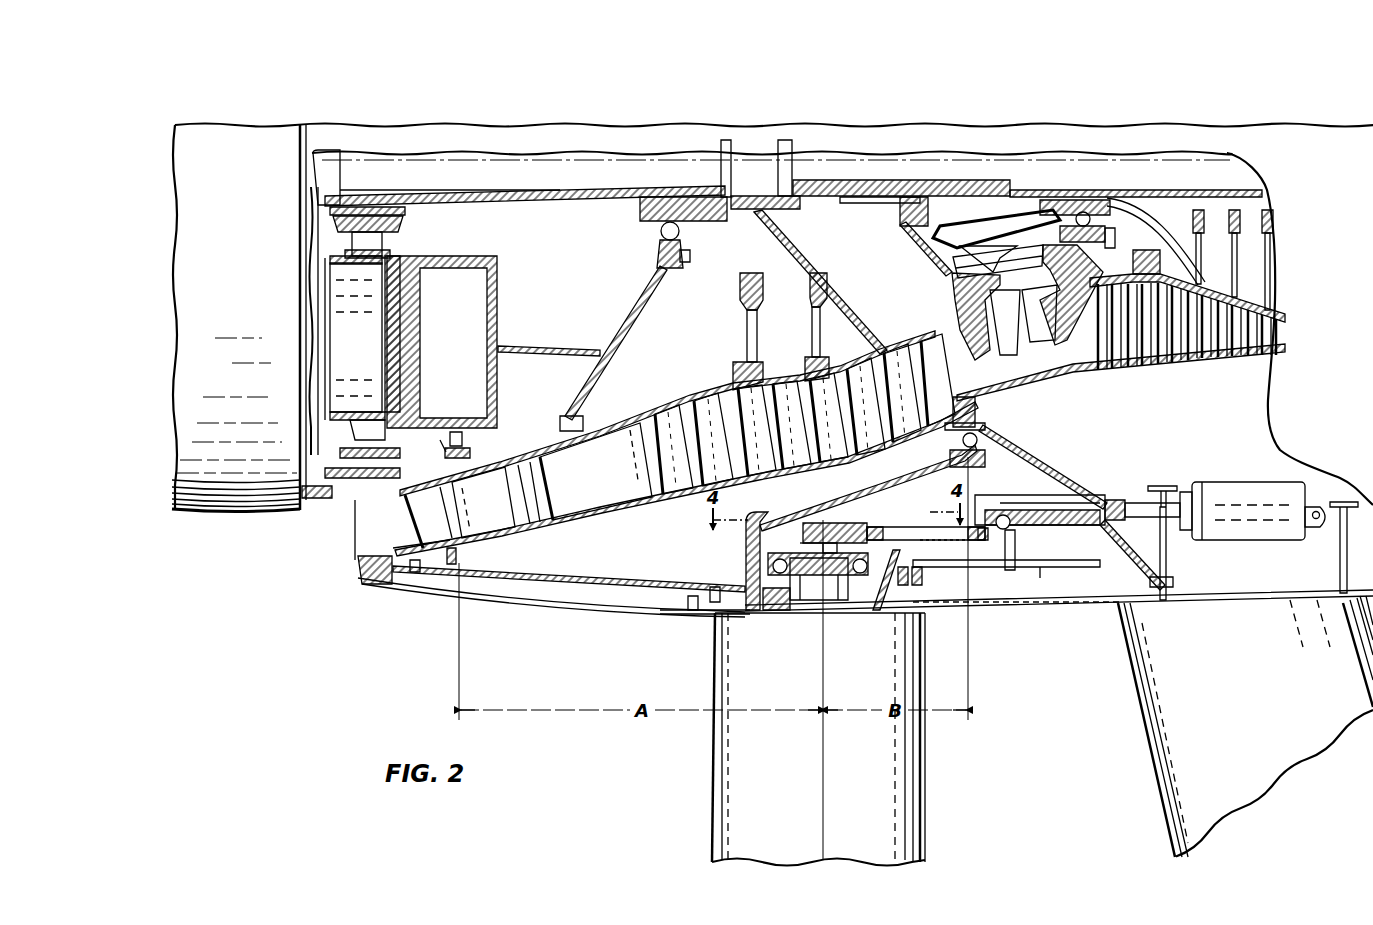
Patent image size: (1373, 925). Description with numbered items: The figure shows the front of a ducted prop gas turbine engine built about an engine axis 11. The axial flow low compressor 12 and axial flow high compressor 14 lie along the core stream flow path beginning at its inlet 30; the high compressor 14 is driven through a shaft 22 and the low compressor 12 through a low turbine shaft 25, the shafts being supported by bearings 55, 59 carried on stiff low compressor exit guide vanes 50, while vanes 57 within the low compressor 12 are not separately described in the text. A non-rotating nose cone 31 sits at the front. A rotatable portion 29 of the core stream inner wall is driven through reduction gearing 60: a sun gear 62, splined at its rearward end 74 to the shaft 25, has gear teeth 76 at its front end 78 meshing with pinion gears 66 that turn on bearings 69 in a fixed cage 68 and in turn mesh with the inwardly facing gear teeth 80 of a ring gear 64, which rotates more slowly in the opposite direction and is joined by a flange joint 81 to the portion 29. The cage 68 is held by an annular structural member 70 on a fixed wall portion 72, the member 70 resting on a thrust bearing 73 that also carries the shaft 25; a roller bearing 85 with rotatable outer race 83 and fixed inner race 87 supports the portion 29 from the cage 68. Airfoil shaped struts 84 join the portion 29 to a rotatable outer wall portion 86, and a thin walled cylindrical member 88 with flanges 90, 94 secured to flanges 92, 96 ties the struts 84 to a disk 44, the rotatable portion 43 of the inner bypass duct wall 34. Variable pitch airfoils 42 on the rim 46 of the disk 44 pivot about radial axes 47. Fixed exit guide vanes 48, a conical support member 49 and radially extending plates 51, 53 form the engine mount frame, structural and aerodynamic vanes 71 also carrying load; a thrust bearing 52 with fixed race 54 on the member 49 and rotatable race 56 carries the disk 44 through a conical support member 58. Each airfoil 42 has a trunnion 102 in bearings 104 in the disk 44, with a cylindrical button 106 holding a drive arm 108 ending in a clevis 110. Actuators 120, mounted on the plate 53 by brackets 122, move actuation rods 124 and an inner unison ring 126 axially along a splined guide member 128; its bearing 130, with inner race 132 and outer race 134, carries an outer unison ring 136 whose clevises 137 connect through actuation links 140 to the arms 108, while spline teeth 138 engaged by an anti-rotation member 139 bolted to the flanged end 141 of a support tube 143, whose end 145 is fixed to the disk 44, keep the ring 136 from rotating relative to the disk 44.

The engine axis 11 is at (545, 158).
The axial flow low compressor 12 is at (742, 348).
The axial flow high compressor 14 is at (1138, 362).
The shaft 22 is at (1105, 192).
The low turbine shaft 25 is at (950, 182).
The rotatable portion of the inner wall 29 is at (428, 517).
The inlet 30 is at (372, 533).
The non-rotating nose cone 31 is at (250, 505).
The inner bypass duct wall 34 is at (1367, 594).
The airfoils 42 is at (830, 806).
The rotatable portion of the inner bypass duct wall 43 is at (545, 612).
The disk 44 is at (748, 560).
The rim 46 is at (776, 599).
The radially extending axes 47 is at (826, 672).
The fixed exit guide vanes 48 is at (1270, 724).
The conical support member 49 is at (1130, 550).
The low compressor exit guide vanes 50 is at (1062, 363).
The radially extending plate 51 is at (1166, 548).
The thrust bearing 52 is at (984, 447).
The radially extending plate 53 is at (1339, 568).
The fixed inner race 54 is at (960, 430).
The bearing 55 is at (1098, 222).
The rotatable inner race 56 is at (962, 444).
The stator vane 57 is at (760, 306).
The conical support member 58 is at (892, 486).
The bearing 59 is at (900, 214).
The reduction gearing 60 is at (333, 327).
The sun gear 62 is at (612, 195).
The ring gear 64 is at (378, 478).
The pinion gears 66 is at (335, 220).
The fixed cage 68 is at (430, 262).
The bearings 69 is at (384, 238).
The annular structural member 70 is at (636, 318).
The structural and aerodynamic vanes 71 is at (595, 472).
The fixed portion of the wall 72 is at (620, 420).
The thrust bearing 73 is at (660, 233).
The rearward end 74 is at (680, 196).
The gear teeth 76 is at (335, 210).
The front end 78 is at (385, 200).
The gear teeth 80 is at (400, 455).
The flange joint 81 is at (312, 500).
The rotatable outer race 83 is at (471, 453).
The airfoil shaped struts 84 is at (478, 504).
The roller bearing 85 is at (437, 442).
The rotatable wall portion 86 is at (518, 528).
The fixed inner race 87 is at (464, 439).
The cylindrical member 88 is at (592, 578).
The radially inwardly extending annular flange 90 is at (440, 565).
The radially outwardly extending annular flange 92 is at (458, 554).
The radially outwardly extending flange 94 is at (688, 603).
The radially inwardly extending annular flange 96 is at (721, 585).
The trunnion 102 is at (815, 590).
The bearings 104 is at (819, 583).
The cylindrical button 106 is at (810, 546).
The drive arm 108 is at (835, 530).
The clevis 110 is at (878, 527).
The actuators 120 is at (1240, 508).
The bracket 122 is at (1316, 528).
The actuation rod 124 is at (1112, 500).
The inner unison ring 126 is at (1050, 518).
The cylindrical guide member 128 is at (1045, 496).
The bearing 130 is at (1003, 514).
The inner race 132 is at (1042, 519).
The outer race 134 is at (1016, 548).
The outer unison ring 136 is at (975, 544).
The clevises 137 is at (942, 548).
The spline teeth 138 is at (1009, 556).
The anti-rotation member 139 is at (1056, 572).
The actuation links 140 is at (928, 515).
The flanged end 141 is at (975, 573).
The cylindrical support tube 143 is at (953, 573).
The end 145 is at (897, 575).